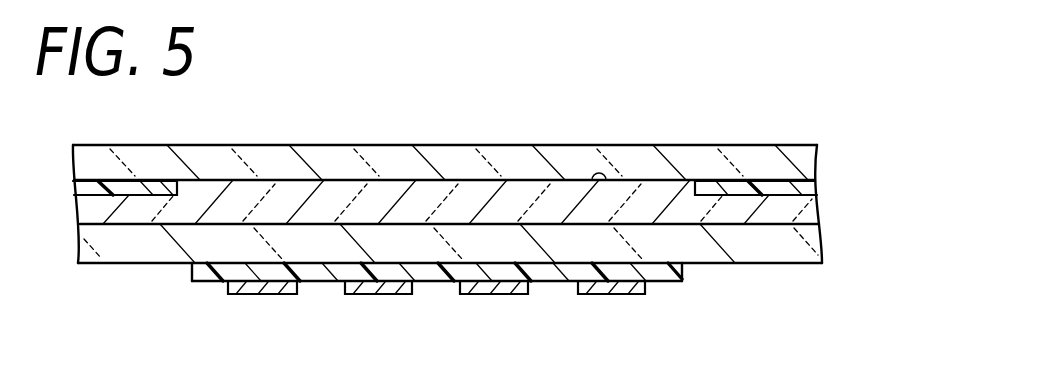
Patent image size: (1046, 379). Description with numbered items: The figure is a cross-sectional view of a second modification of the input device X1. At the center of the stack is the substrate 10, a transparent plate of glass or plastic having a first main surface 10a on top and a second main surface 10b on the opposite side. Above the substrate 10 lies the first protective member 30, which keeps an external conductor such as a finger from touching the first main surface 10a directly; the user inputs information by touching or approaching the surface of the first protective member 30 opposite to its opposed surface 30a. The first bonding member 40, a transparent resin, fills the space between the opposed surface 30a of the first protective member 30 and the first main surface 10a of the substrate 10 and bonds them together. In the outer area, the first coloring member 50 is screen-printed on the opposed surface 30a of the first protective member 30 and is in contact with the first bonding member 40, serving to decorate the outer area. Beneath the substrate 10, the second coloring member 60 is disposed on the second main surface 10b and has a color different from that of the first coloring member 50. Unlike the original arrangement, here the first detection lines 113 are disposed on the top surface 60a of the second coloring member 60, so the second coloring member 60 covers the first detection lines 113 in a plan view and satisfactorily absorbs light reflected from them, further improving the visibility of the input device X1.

The substrate 10 is at (475, 218).
The first main surface 10a is at (460, 224).
The second main surface 10b is at (127, 265).
The first protective member 30 is at (800, 163).
The opposed surface 30a is at (594, 188).
The first bonding member 40 is at (805, 208).
The first coloring member 50 is at (133, 190).
The second coloring member 60 is at (437, 321).
The top surface of second coloring member 60a is at (550, 283).
The first detection line 113 is at (268, 295).
The input device X1 is at (670, 70).